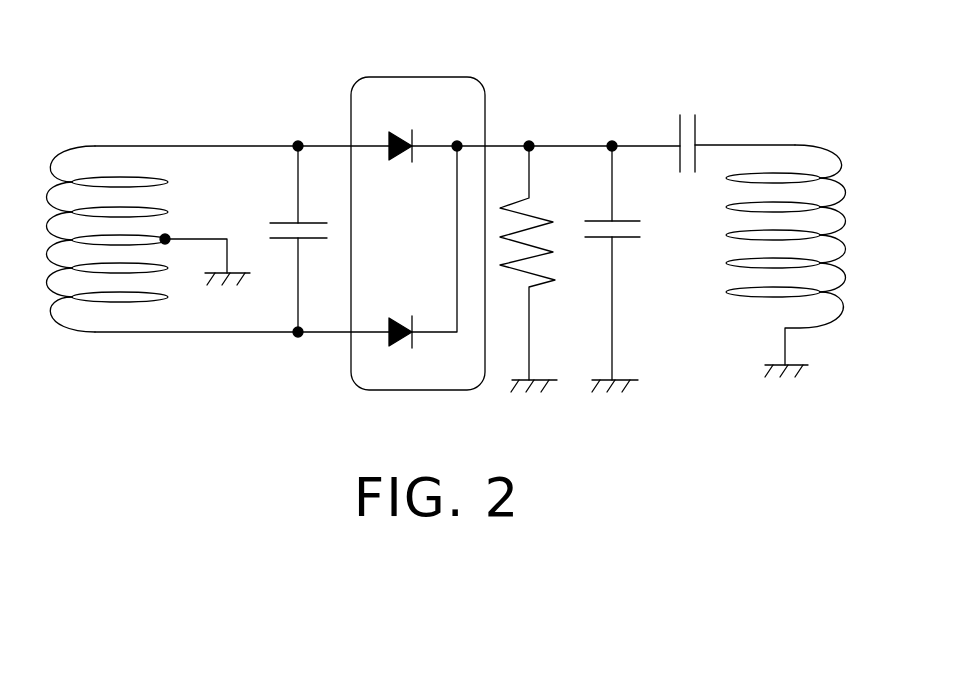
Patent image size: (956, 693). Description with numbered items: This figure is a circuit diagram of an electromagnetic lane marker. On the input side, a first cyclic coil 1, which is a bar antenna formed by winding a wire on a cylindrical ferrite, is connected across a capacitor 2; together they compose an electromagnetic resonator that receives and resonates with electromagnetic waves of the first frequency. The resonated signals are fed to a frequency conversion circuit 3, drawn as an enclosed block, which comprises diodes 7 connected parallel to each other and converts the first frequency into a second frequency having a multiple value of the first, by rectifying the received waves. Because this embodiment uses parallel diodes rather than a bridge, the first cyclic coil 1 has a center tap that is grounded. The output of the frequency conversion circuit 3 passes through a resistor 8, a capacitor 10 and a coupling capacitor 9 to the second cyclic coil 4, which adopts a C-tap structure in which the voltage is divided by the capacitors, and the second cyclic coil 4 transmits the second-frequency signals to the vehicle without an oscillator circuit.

The first cyclic coil 1 is at (97, 146).
The capacitor 2 is at (285, 240).
The frequency conversion circuit 3 is at (480, 78).
The second cyclic coil 4 is at (793, 145).
The diodes 7 is at (397, 160).
The resistor 8 is at (540, 286).
The coupling capacitor 9 is at (697, 124).
The capacitor 10 is at (627, 238).